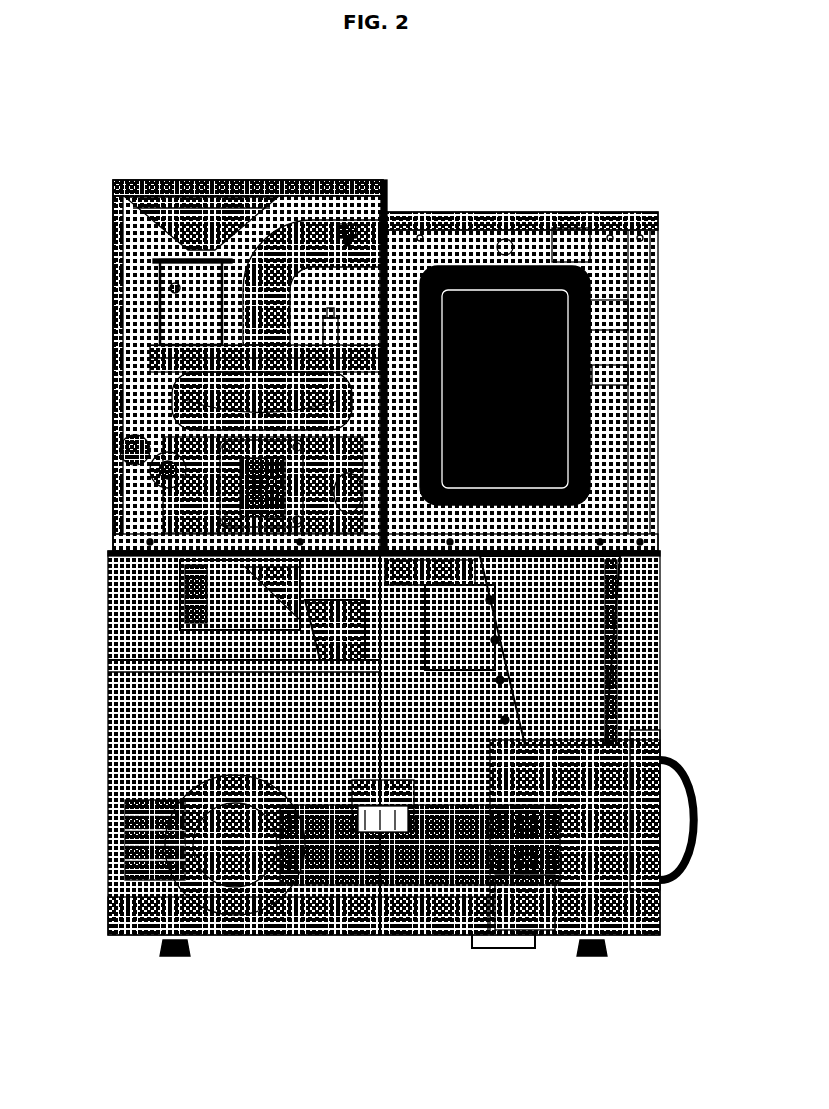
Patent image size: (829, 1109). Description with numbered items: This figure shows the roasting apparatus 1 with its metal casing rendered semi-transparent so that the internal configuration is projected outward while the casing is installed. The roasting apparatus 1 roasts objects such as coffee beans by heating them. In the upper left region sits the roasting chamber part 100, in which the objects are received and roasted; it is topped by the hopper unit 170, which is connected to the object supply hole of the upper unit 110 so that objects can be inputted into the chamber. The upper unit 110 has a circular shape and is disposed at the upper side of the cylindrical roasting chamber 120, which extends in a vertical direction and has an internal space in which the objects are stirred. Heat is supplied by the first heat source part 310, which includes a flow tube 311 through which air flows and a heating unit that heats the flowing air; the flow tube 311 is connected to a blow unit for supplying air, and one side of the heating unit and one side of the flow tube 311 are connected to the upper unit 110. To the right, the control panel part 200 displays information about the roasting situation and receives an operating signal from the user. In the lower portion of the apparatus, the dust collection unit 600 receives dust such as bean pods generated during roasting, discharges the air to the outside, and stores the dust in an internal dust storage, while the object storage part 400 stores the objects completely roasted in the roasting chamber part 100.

The roasting apparatus 1 is at (518, 205).
The roasting chamber part 100 is at (203, 172).
The upper unit 110 is at (143, 356).
The roasting chamber 120 is at (163, 401).
The hopper unit 170 is at (140, 237).
The control panel part 200 is at (605, 352).
The first heat source part 310 is at (300, 212).
The flow tube 311 is at (347, 224).
The object storage part 400 is at (317, 925).
The dust collection unit 600 is at (614, 645).